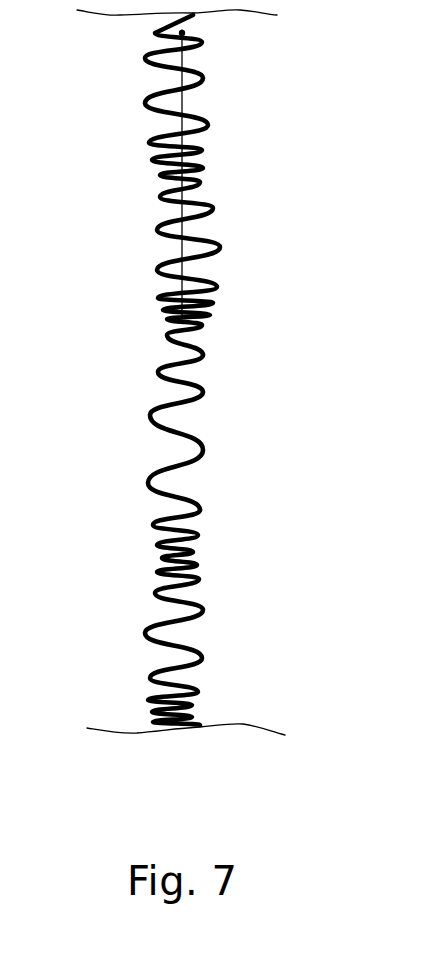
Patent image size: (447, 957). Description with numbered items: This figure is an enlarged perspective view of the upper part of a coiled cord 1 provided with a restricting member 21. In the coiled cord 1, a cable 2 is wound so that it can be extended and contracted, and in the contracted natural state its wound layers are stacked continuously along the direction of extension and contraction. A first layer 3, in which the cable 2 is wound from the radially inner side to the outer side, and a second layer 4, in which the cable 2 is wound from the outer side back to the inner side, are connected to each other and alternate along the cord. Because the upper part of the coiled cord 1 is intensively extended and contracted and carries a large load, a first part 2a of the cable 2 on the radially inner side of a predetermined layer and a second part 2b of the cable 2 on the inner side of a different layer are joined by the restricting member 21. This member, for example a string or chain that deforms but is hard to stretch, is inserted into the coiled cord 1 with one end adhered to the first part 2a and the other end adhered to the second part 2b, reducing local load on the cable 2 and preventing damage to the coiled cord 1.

The coiled cord 1 is at (243, 370).
The cable 2 is at (203, 450).
The first part of the cable 2a is at (160, 34).
The second part of the cable 2b is at (176, 319).
The first layer 3 is at (212, 367).
The second layer 4 is at (230, 540).
The restricting member 21 is at (183, 228).